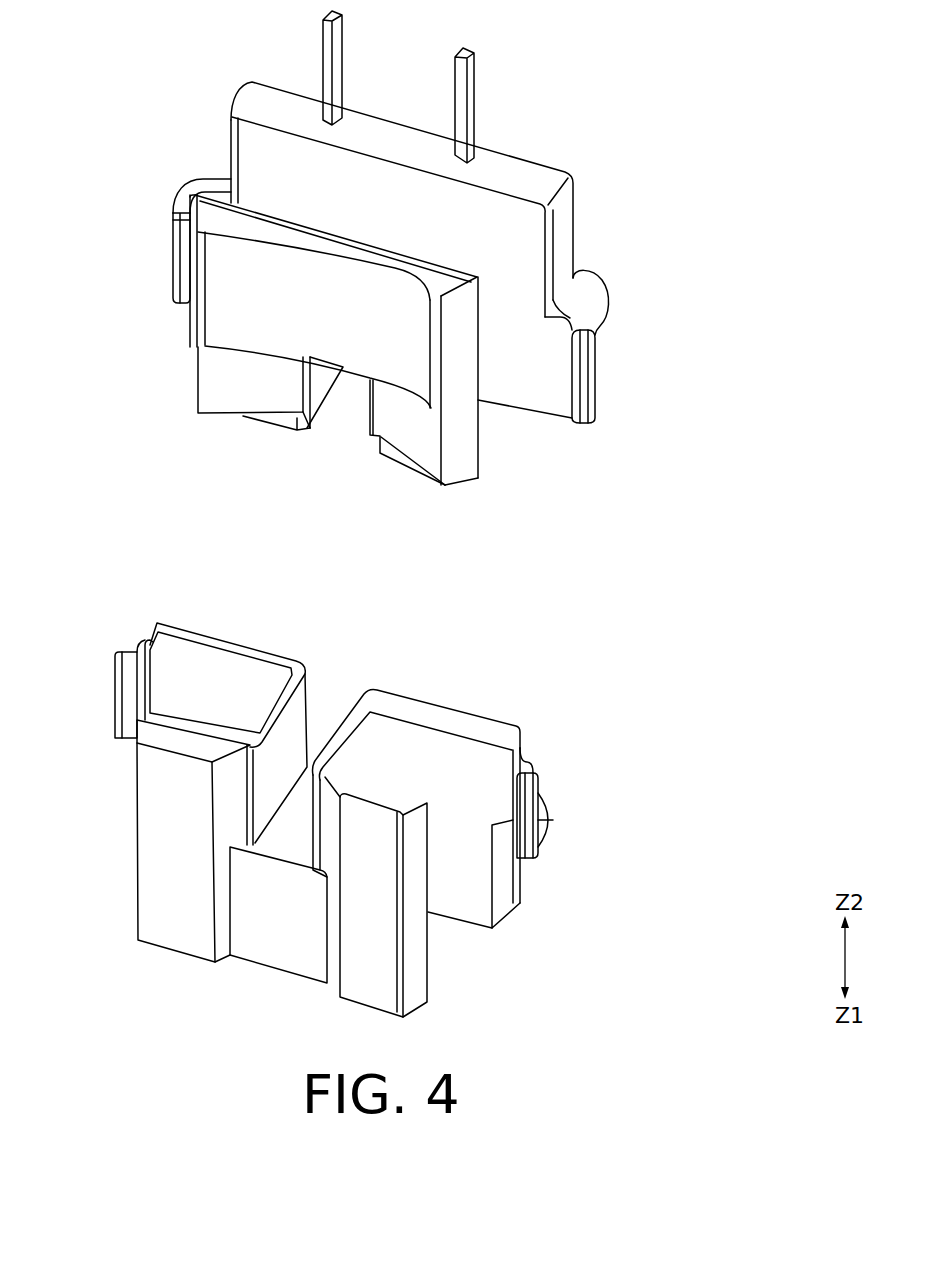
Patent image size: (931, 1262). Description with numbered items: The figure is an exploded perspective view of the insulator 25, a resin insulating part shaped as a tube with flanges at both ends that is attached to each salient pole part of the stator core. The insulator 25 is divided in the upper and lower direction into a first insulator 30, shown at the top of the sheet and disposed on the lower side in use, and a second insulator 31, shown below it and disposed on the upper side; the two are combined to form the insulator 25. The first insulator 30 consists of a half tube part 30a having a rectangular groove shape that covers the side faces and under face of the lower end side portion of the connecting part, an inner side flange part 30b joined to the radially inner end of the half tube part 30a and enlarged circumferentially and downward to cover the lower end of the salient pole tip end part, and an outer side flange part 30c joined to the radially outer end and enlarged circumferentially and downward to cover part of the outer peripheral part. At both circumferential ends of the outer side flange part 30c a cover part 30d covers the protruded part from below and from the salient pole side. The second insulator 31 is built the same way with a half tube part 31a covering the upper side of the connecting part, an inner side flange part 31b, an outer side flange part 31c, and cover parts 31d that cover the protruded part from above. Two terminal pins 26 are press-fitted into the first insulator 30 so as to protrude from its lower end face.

The insulator 25 is at (738, 571).
The terminal pin 26 is at (343, 65).
The first insulator 30 is at (596, 405).
The half tube part 30a is at (330, 397).
The inner side flange part 30b is at (190, 322).
The outer side flange part 30c is at (573, 235).
The cover part 30d is at (173, 255).
The second insulator 31 is at (520, 737).
The half tube part 31a is at (272, 695).
The inner side flange part 31b is at (137, 790).
The outer side flange part 31c is at (448, 702).
The cover part 31d is at (113, 693).